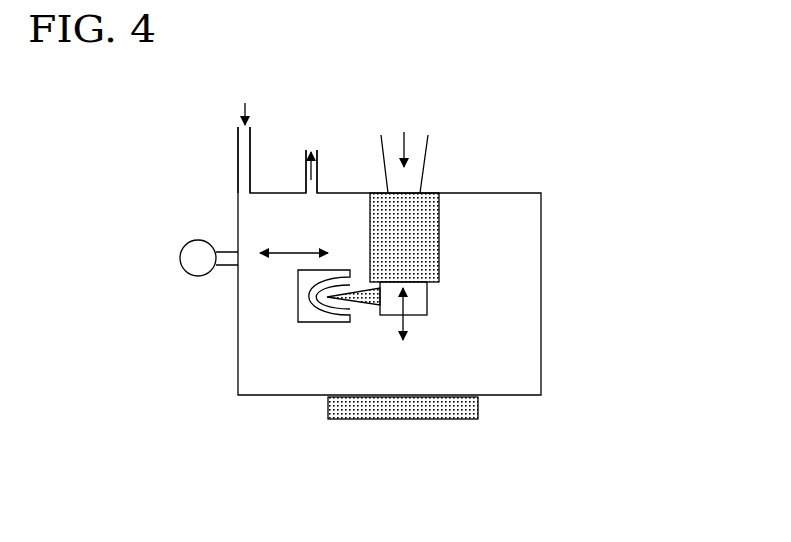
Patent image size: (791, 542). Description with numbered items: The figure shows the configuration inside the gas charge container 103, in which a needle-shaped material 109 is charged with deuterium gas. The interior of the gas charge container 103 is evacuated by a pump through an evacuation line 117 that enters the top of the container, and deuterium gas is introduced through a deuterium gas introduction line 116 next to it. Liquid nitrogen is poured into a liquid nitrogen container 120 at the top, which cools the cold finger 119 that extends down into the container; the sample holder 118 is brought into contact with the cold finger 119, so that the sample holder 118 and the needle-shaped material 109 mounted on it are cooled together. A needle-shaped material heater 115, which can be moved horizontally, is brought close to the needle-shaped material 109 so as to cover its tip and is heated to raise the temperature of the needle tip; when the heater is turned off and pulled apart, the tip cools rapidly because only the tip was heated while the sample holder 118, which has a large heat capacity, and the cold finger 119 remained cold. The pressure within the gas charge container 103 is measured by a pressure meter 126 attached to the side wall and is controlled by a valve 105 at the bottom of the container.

The gas charge container 103 is at (541, 220).
The valve 105 is at (472, 420).
The needle-shaped material 109 is at (367, 303).
The needle-shaped material heater 115 is at (298, 311).
The deuterium gas introduction line 116 is at (238, 150).
The evacuation line 117 is at (318, 179).
The sample holder 118 is at (420, 302).
The cold finger 119 is at (439, 220).
The liquid nitrogen container 120 is at (428, 143).
The pressure meter 126 is at (200, 240).